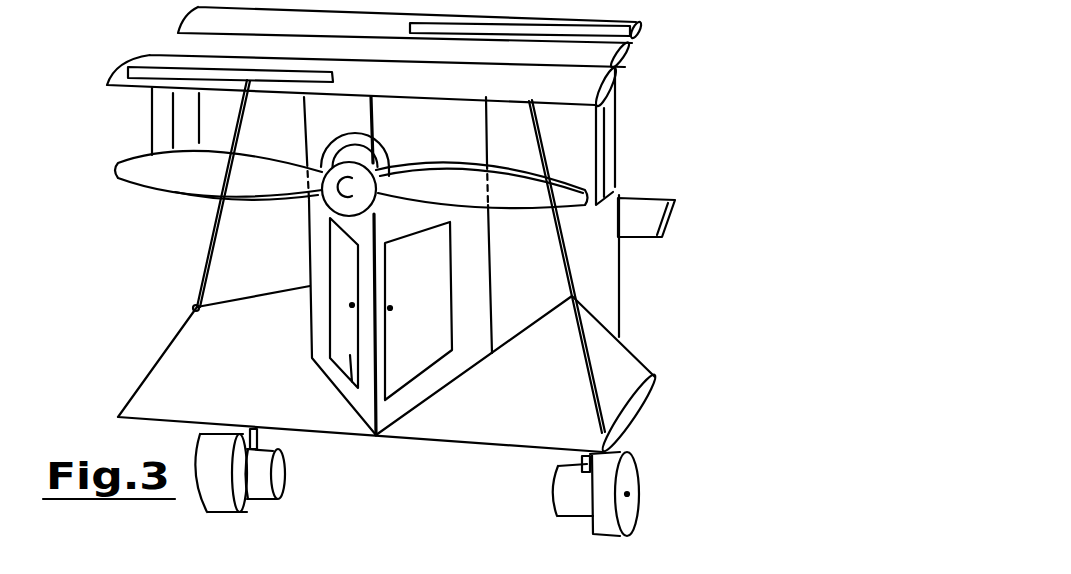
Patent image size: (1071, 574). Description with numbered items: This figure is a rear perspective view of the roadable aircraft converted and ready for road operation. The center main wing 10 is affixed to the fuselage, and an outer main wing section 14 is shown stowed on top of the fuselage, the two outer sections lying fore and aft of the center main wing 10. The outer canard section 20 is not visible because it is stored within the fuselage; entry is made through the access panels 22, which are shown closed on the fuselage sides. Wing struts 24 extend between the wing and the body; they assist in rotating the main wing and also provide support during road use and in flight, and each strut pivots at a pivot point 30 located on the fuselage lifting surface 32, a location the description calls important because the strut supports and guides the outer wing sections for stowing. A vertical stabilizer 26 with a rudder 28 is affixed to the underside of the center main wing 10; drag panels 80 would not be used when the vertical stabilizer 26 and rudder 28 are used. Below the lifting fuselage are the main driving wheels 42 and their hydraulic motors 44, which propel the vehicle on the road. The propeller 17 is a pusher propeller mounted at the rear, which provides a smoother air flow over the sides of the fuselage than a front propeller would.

The center main wing section 10 is at (595, 60).
The outer main wing section 14 is at (572, 90).
The propeller 17 is at (205, 182).
The outer canard section 20 is at (648, 220).
The access panels 22 is at (413, 348).
The wing struts 24 is at (203, 275).
The vertical stabilizer 26 is at (188, 107).
The rudder 28 is at (163, 123).
The pivot point 30 is at (193, 313).
The fuselage lifting surface 32 is at (313, 397).
The main driving wheels 42 is at (218, 474).
The hydraulic motors 44 is at (260, 459).
The drag panels 80 is at (423, 565).